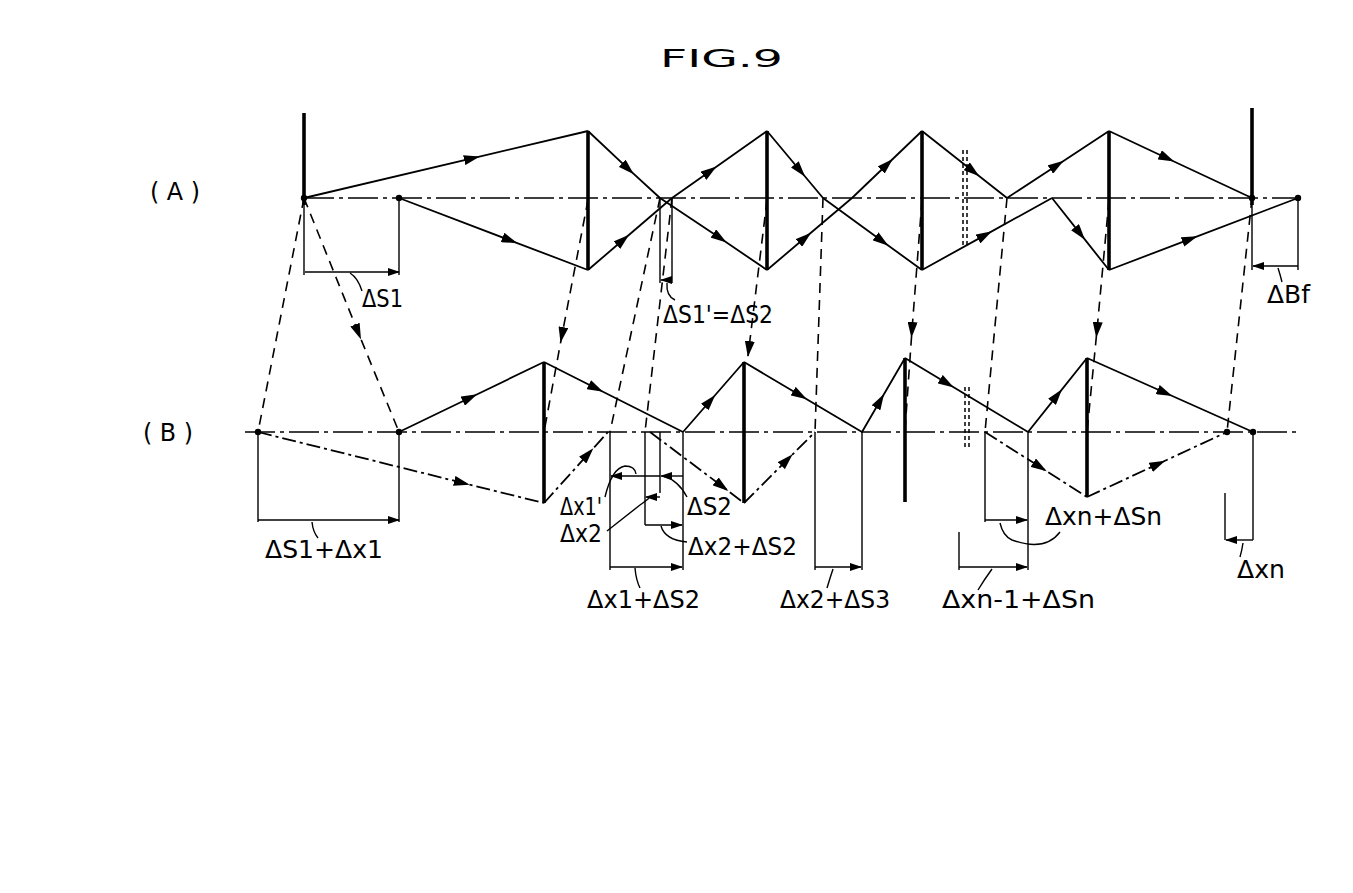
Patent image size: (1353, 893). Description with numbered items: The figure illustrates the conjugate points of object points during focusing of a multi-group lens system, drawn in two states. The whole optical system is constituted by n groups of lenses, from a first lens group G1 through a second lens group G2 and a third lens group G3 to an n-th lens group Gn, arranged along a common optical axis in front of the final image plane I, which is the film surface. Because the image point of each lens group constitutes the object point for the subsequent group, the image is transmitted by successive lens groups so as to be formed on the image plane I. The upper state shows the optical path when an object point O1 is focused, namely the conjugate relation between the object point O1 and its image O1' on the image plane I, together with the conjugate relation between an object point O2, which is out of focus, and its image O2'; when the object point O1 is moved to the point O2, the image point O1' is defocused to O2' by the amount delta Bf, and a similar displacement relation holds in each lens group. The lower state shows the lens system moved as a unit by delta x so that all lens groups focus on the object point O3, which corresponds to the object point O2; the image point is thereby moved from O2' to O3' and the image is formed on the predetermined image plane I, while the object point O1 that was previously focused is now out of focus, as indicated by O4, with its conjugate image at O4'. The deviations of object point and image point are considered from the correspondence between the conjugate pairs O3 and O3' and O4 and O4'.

The first lens group G1 is at (626, 184).
The second lens group G2 is at (808, 184).
The third lens group G3 is at (962, 184).
The n-th lens group Gn is at (1156, 185).
The image plane I is at (1255, 134).
The object point O1 is at (290, 194).
The object point O2 is at (382, 235).
The image of object point O1 O1' is at (1278, 182).
The image of object point O2 O2' is at (1323, 232).
The object point O3 is at (375, 457).
The object point O4 is at (240, 457).
The image of object point O3 O3' is at (1275, 465).
The image of object point O4 O4' is at (1215, 452).